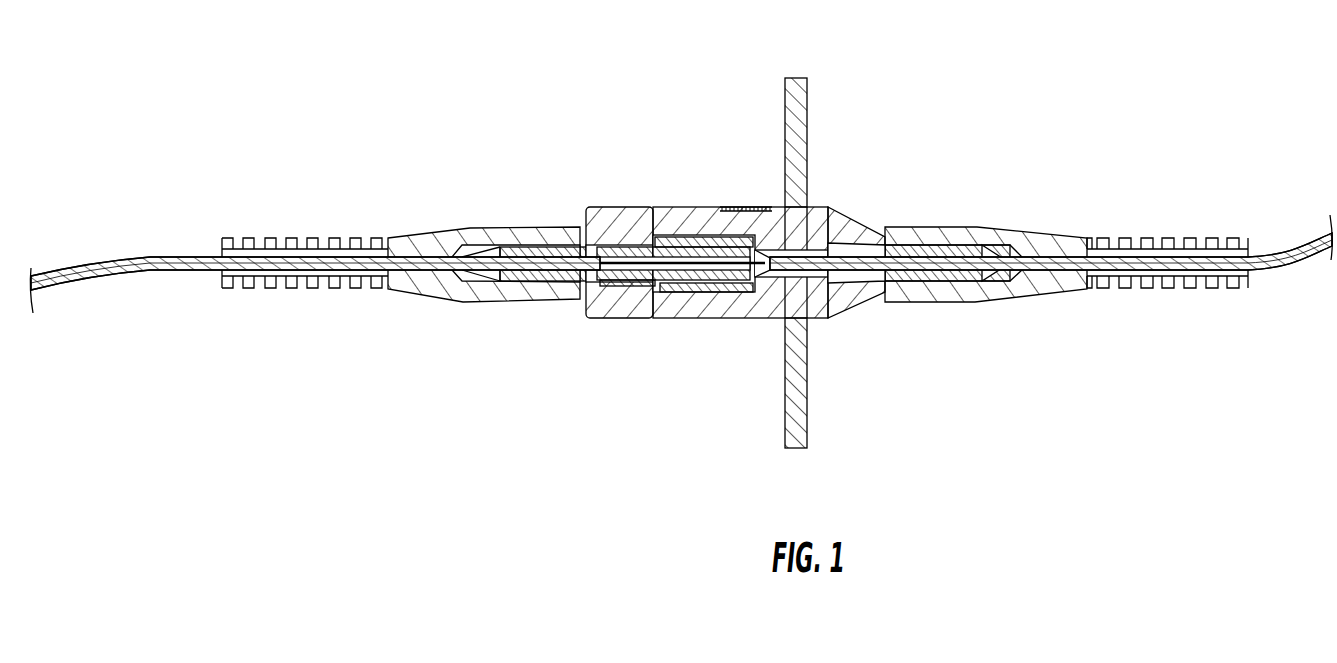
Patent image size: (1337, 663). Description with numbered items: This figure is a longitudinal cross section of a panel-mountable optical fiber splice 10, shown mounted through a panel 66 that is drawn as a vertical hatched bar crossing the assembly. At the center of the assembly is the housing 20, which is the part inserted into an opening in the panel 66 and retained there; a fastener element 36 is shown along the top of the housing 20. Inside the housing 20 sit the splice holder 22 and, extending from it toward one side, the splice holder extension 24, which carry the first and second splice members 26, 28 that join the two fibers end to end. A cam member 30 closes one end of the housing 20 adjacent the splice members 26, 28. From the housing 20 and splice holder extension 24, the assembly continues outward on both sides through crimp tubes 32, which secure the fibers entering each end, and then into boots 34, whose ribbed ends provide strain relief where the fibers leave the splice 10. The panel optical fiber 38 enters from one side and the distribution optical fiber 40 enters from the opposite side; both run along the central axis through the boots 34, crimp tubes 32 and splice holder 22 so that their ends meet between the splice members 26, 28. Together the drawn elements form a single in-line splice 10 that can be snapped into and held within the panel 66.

The panel-mountable optical fiber splice 10 is at (522, 423).
The housing 20 is at (678, 207).
The splice holder 22 is at (605, 286).
The splice holder extension 24 is at (910, 243).
The first splice member 26 is at (652, 245).
The second splice member 28 is at (683, 286).
The cam member 30 is at (590, 320).
The crimp tubes 32 is at (480, 275).
The boots 34 is at (445, 294).
The fastener element 36 is at (743, 207).
The panel optical fiber 38 is at (1295, 237).
The distribution optical fiber 40 is at (117, 275).
The panel 66 is at (798, 78).